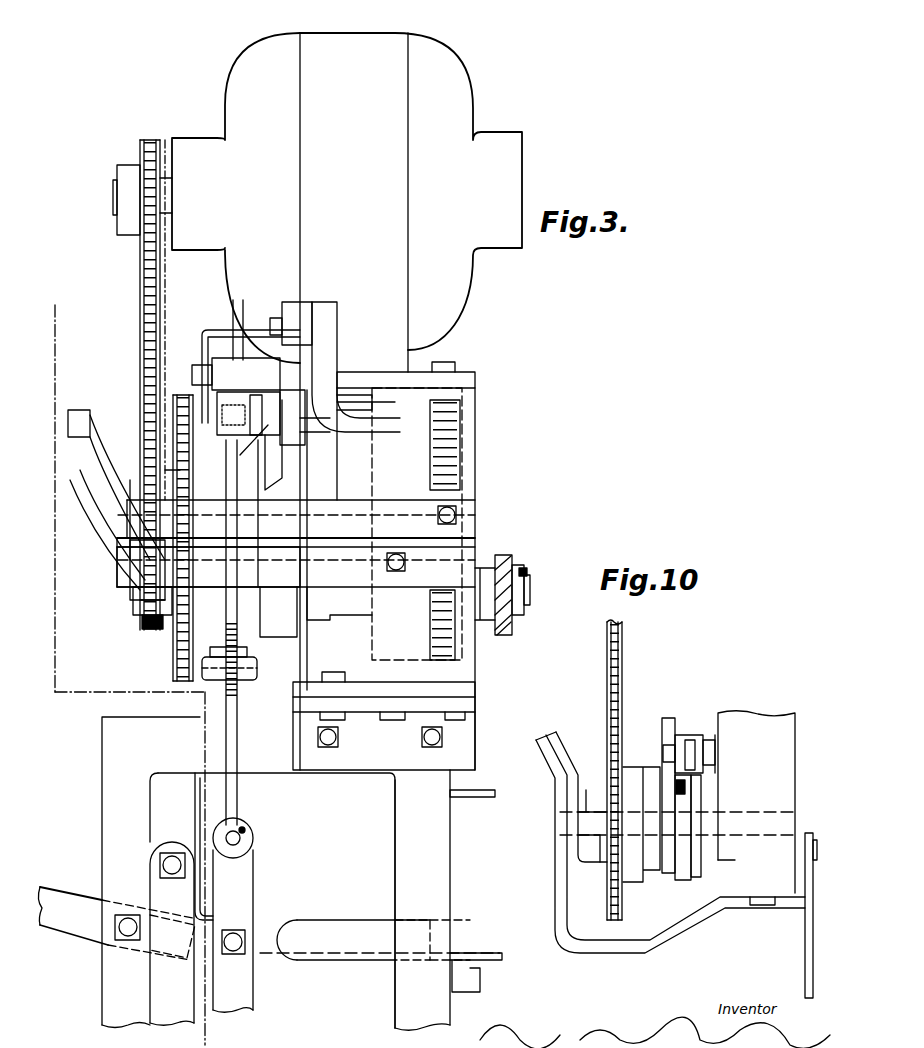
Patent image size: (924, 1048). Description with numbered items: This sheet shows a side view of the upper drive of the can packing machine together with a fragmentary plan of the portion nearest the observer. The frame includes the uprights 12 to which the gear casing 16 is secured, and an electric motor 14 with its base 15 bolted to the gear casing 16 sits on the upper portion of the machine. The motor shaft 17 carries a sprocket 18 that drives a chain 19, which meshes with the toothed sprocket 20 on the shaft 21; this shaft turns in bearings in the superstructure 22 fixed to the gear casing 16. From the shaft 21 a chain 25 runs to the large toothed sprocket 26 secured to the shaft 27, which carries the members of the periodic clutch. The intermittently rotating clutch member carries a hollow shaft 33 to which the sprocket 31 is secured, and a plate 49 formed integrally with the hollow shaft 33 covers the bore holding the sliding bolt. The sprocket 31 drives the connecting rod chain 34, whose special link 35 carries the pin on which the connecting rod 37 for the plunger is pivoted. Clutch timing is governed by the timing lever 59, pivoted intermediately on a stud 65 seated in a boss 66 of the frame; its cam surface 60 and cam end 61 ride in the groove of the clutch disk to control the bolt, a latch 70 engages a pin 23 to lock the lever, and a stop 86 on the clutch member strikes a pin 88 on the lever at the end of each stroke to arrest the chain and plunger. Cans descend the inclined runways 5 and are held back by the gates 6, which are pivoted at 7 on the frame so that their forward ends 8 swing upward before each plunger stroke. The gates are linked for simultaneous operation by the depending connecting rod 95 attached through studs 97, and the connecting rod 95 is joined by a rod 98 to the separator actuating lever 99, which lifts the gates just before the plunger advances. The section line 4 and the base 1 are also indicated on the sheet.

In FIG. 3, the base 1 is at (505, 950).
In FIG. 3, the section line 4 is at (132, 664).
In FIG. 3, the runway 5 is at (62, 893).
In FIG. 3, the gate 6 is at (315, 925).
In FIG. 3, the gate pivot 7 is at (172, 853).
In FIG. 3, the forward end of gate 8 is at (432, 918).
In FIG. 3, the upright 12 is at (113, 797).
In FIG. 3, the electric motor 14 is at (393, 44).
In FIG. 3, the motor base 15 is at (475, 372).
In FIG. 3, the gear casing 16 is at (375, 615).
In FIG. 10, the gear casing 16 is at (785, 712).
In FIG. 3, the motor shaft 17 is at (113, 196).
In FIG. 3, the sprocket 18 is at (140, 140).
In FIG. 3, the chain 19 is at (140, 292).
In FIG. 3, the toothed sprocket 20 is at (140, 628).
In FIG. 3, the shaft 21 is at (118, 538).
In FIG. 3, the superstructure 22 is at (128, 592).
In FIG. 10, the superstructure 22 is at (557, 935).
In FIG. 3, the pin 23 is at (330, 418).
In FIG. 10, the pin 23 is at (695, 765).
In FIG. 3, the chain 25 is at (178, 395).
In FIG. 10, the chain 25 is at (607, 676).
In FIG. 3, the toothed sprocket 26 is at (170, 470).
In FIG. 10, the toothed sprocket 26 is at (625, 767).
In FIG. 10, the shaft 27 is at (558, 838).
In FIG. 3, the sprocket 31 is at (455, 415).
In FIG. 3, the hollow shaft 33 is at (410, 495).
In FIG. 3, the connecting rod chain 34 is at (460, 448).
In FIG. 3, the special link 35 is at (485, 565).
In FIG. 3, the connecting rod 37 is at (512, 556).
In FIG. 10, the connecting rod 37 is at (805, 953).
In FIG. 3, the plate 49 is at (330, 572).
In FIG. 3, the timing lever 59 is at (262, 425).
In FIG. 10, the timing lever 59 is at (662, 735).
In FIG. 3, the cam surface 60 is at (282, 478).
In FIG. 10, the cam surface 60 is at (670, 878).
In FIG. 3, the cam end 61 is at (280, 455).
In FIG. 3, the stud 65 is at (357, 395).
In FIG. 3, the boss 66 is at (345, 400).
In FIG. 10, the latch 70 is at (688, 738).
In FIG. 10, the stop 86 is at (682, 850).
In FIG. 3, the pin 88 is at (305, 412).
In FIG. 10, the pin 88 is at (678, 800).
In FIG. 3, the connecting rod 95 is at (243, 880).
In FIG. 3, the stud 97 is at (240, 932).
In FIG. 3, the rod 98 is at (226, 742).
In FIG. 3, the separator actuating lever 99 is at (250, 672).